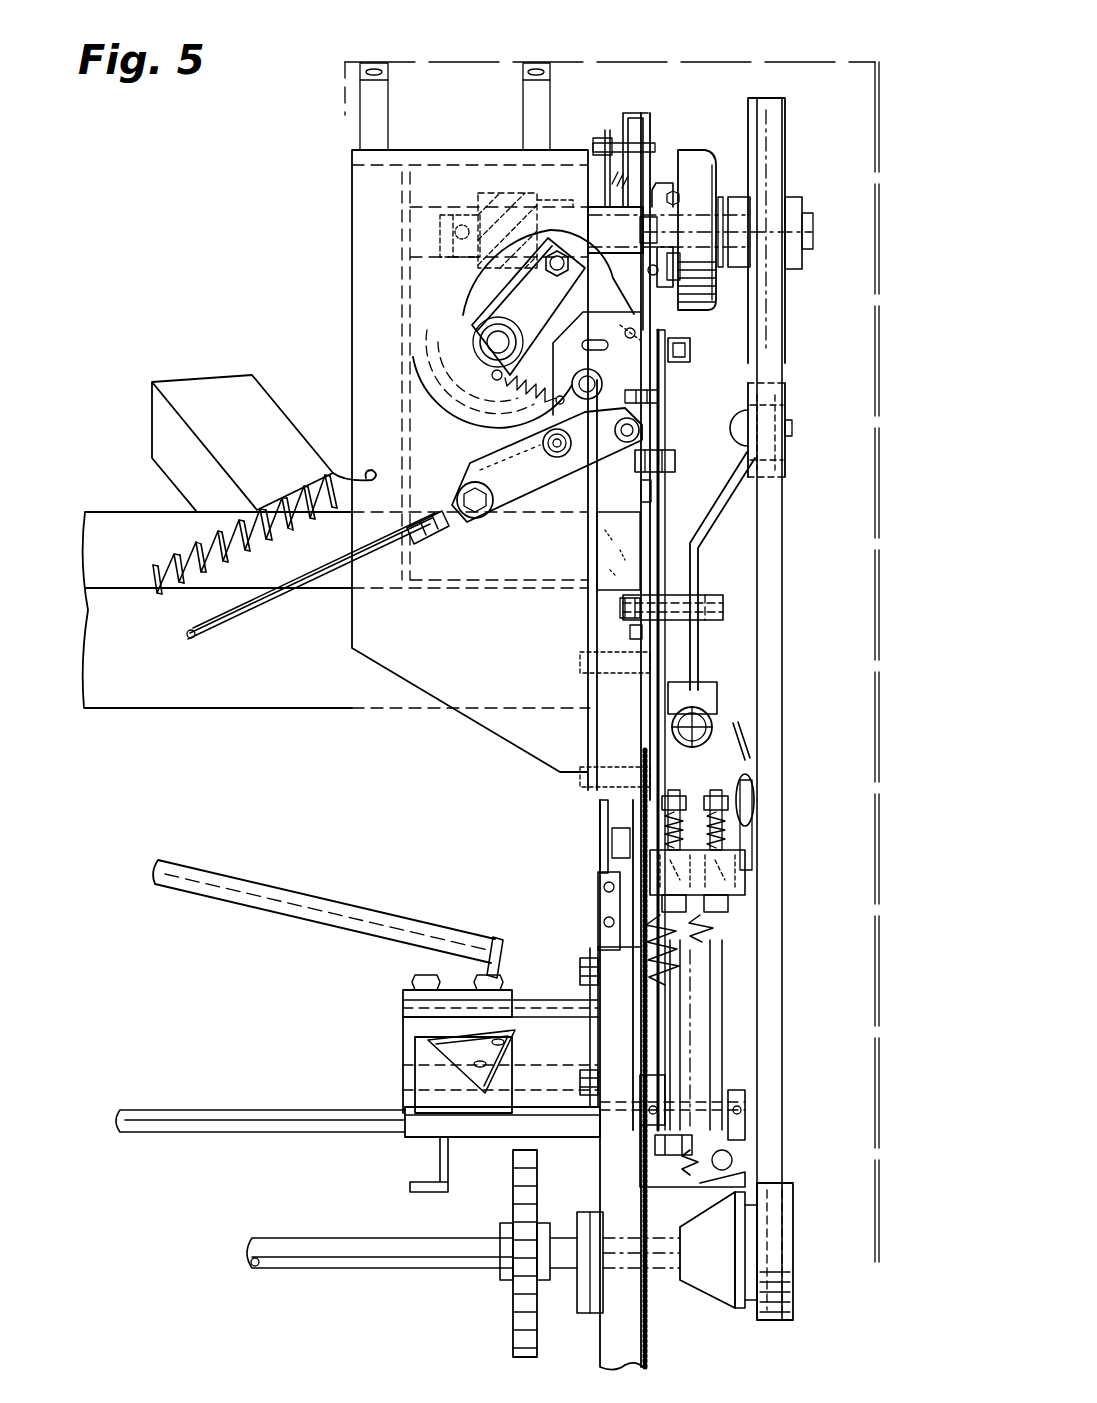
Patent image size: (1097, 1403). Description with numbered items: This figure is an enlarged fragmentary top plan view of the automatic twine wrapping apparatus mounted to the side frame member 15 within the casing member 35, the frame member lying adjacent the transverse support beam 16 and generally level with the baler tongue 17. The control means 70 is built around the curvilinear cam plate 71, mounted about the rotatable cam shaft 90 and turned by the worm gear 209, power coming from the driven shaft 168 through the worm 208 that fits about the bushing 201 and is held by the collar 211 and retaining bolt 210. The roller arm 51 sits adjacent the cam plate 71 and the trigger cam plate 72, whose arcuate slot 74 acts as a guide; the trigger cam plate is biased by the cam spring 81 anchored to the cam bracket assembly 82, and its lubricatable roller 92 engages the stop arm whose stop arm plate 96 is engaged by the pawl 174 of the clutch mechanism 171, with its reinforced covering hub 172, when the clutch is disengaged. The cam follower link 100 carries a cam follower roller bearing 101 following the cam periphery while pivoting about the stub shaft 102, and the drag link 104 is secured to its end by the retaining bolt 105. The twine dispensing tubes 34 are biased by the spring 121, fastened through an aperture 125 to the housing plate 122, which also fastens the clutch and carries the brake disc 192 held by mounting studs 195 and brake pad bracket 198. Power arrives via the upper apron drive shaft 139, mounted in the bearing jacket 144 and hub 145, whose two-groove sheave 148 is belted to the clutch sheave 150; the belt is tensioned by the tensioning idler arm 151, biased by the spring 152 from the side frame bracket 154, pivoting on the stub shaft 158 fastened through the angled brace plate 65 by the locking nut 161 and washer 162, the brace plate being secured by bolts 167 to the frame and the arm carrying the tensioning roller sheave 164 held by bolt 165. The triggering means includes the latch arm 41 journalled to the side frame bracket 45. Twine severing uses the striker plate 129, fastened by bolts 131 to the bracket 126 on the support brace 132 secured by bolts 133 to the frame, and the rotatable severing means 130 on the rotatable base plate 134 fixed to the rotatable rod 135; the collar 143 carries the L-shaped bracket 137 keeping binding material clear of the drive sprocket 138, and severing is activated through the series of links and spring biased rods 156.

The side frame member 15 is at (648, 1318).
The transverse support beam 16 is at (85, 560).
The baler tongue 17 is at (187, 372).
The twine dispensing tubes 34 is at (324, 902).
The casing member 35 is at (836, 62).
The latch arm 41 is at (598, 826).
The side frame bracket 45 is at (600, 900).
The roller arm 51 is at (664, 561).
The angled brace plate 65 is at (668, 510).
The control means 70 is at (434, 421).
The curvilinear cam plate 71 is at (470, 336).
The trigger cam plate 72 is at (527, 420).
The arcuate slot 74 is at (572, 254).
The cam spring 81 is at (540, 386).
The cam bracket assembly 82 is at (472, 320).
The rotatable cam shaft 90 is at (497, 343).
The lubricatable roller 92 is at (668, 338).
The stop arm plate 96 is at (660, 396).
The cam follower link 100 is at (530, 500).
The cam follower roller bearing 101 is at (622, 443).
The stub shaft 102 is at (555, 458).
The drag link 104 is at (256, 620).
The retaining bolt 105 is at (484, 515).
The spring 121 is at (198, 540).
The housing plate 122 is at (352, 248).
The aperture 125 is at (374, 480).
The bracket 126 is at (553, 998).
The striker plate 129 is at (403, 1020).
The rotatable severing means 130 is at (513, 1035).
The bolts 131 is at (478, 978).
The support brace 132 is at (590, 958).
The bolts 133 is at (580, 962).
The rotatable base plate 134 is at (410, 1082).
The rotatable rod 135 is at (250, 1112).
The L-shaped bracket 137 is at (420, 1192).
The drive sprocket 138 is at (515, 1334).
The upper apron drive shaft 139 is at (338, 1268).
The collar 143 is at (418, 1140).
The bearing jacket 144 is at (581, 1285).
The hub 145 is at (787, 1110).
The sheave 148 is at (793, 1230).
The clutch sheave 150 is at (788, 334).
The tensioning idler arm 151 is at (717, 517).
The spring 152 is at (708, 724).
The side frame bracket 154 is at (707, 682).
The series of links and spring biased rods 156 is at (794, 951).
The stub shaft 158 is at (724, 608).
The locking nut 161 is at (620, 604).
The washer 162 is at (635, 625).
The tensioning roller sheave 164 is at (788, 407).
The bolt 165 is at (792, 428).
The bolts 167 is at (675, 461).
The driven shaft 168 is at (805, 226).
The clutch mechanism 171 is at (711, 104).
The reinforced covering hub 172 is at (696, 148).
The pawl 174 is at (690, 350).
The brake disc 192 is at (644, 163).
The mounting studs 195 is at (605, 135).
The brake pad bracket 198 is at (641, 113).
The bushing 201 is at (573, 204).
The worm 208 is at (518, 198).
The worm gear 209 is at (432, 300).
The retaining bolt 210 is at (456, 222).
The collar 211 is at (458, 206).